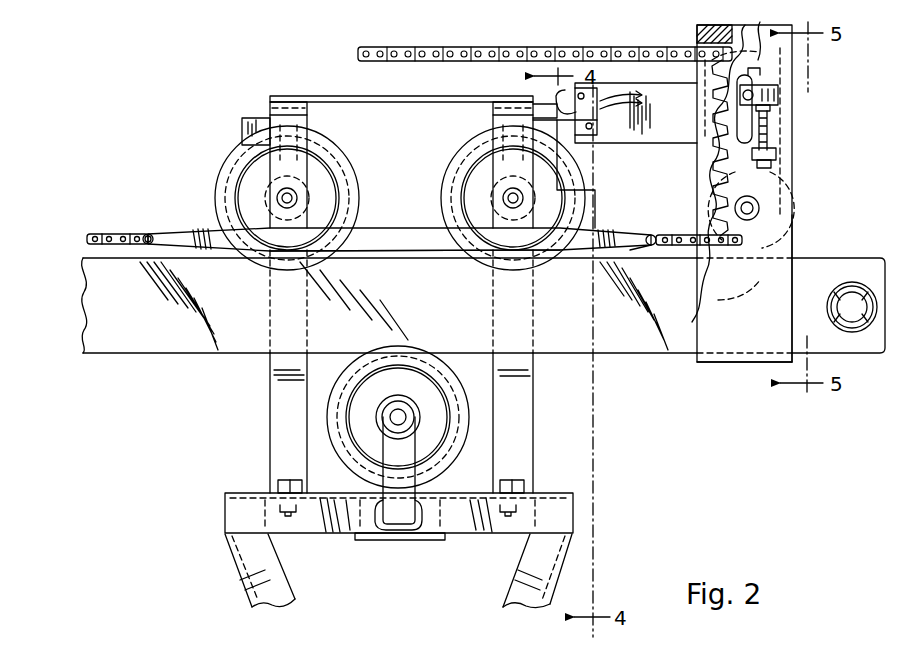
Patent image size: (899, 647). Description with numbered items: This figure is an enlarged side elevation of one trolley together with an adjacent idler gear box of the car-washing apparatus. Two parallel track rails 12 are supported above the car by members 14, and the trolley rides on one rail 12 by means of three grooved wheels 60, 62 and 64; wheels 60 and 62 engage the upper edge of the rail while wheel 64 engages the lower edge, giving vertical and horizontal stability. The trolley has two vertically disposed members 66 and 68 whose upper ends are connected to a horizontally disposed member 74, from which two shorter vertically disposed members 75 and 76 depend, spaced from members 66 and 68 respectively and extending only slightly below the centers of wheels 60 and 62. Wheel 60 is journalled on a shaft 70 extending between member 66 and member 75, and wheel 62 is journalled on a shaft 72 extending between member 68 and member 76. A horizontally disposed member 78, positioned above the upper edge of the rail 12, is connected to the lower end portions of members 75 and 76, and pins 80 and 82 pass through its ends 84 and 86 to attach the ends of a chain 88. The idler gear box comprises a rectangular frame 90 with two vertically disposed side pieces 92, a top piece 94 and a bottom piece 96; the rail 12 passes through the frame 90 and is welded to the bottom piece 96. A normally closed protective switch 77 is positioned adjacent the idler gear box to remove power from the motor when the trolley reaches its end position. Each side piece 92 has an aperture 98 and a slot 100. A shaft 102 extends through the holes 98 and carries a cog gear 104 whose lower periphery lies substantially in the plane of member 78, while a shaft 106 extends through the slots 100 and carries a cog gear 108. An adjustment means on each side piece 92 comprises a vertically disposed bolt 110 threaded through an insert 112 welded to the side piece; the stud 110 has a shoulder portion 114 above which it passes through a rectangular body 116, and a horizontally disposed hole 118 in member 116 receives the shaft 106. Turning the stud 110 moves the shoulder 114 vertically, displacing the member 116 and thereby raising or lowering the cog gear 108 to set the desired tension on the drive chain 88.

The track rail 12 is at (140, 352).
The support member 14 is at (845, 284).
The wheel 60 is at (343, 152).
The wheel 62 is at (584, 176).
The wheel 64 is at (458, 454).
The vertically disposed member 66 is at (268, 408).
The vertically disposed member 68 is at (534, 410).
The shaft 70 is at (298, 200).
The shaft 72 is at (503, 196).
The horizontally disposed member 74 is at (408, 82).
The vertically disposed member 75 is at (306, 142).
The vertically disposed member 76 is at (492, 128).
The switch 77 is at (626, 113).
The horizontally disposed member 78 is at (428, 252).
The pin 80 is at (148, 238).
The pin 82 is at (656, 237).
The end of member 78 84 is at (176, 232).
The end of member 78 86 is at (650, 248).
The chain 88 is at (522, 50).
The rectangular frame 90 is at (744, 32).
The side piece 92 is at (793, 234).
The top piece 94 is at (696, 36).
The bottom piece 96 is at (727, 364).
The aperture 98 is at (760, 212).
The slot 100 is at (770, 84).
The shaft 102 is at (775, 204).
The cog gear 104 is at (716, 192).
The shaft 106 is at (743, 96).
The cog gear 108 is at (718, 110).
The bolt 110 is at (770, 136).
The threaded insert 112 is at (778, 154).
The shoulder portion 114 is at (770, 108).
The rectangular body 116 is at (780, 96).
The horizontally disposed hole 118 is at (716, 84).